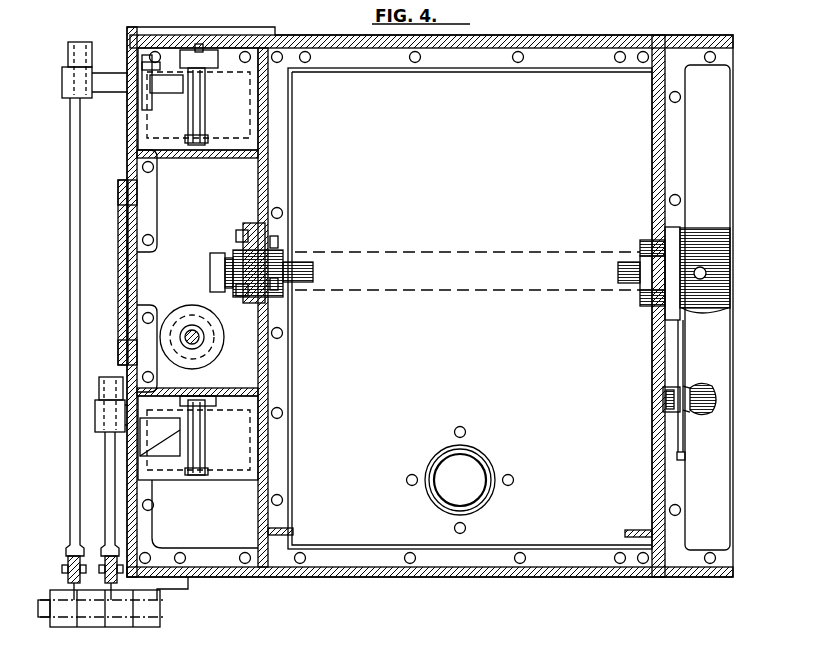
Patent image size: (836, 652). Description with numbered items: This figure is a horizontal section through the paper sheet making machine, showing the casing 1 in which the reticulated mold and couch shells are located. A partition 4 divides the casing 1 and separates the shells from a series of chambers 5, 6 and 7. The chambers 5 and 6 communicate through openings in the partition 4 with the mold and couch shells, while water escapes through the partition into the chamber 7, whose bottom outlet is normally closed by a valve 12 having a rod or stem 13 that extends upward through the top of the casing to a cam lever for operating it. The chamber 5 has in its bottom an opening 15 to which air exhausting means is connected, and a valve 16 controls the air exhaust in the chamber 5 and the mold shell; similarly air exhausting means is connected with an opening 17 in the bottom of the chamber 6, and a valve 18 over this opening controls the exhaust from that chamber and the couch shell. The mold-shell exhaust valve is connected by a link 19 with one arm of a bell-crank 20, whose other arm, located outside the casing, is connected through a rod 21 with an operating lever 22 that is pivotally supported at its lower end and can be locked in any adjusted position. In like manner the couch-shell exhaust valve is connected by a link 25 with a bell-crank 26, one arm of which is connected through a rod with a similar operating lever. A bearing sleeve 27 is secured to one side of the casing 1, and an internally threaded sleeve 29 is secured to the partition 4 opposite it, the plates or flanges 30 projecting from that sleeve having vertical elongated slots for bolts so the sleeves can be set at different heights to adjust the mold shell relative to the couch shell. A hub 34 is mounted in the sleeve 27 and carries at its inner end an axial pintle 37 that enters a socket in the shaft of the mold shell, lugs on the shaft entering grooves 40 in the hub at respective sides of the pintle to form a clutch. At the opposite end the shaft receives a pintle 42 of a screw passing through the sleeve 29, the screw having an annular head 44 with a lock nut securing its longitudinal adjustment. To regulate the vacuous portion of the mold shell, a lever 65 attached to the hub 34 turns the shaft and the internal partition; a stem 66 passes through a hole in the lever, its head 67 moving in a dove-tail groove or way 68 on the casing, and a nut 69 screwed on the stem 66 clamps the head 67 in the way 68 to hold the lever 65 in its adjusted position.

The casing 1 is at (378, 592).
The partition 4 is at (270, 440).
The chamber 5 is at (197, 468).
The chamber 6 is at (228, 52).
The chamber 7 is at (152, 272).
The valve 12 is at (222, 337).
The rod or stem 13 is at (192, 328).
The opening 15 is at (160, 444).
The valve 16 is at (198, 438).
The opening 17 is at (162, 95).
The valve 18 is at (198, 105).
The link 19 is at (198, 476).
The bell-crank 20 is at (96, 402).
The rod 21 is at (106, 466).
The operating lever 22 is at (70, 560).
The link 25 is at (200, 146).
The bell-crank 26 is at (63, 68).
The bearing sleeve 27 is at (404, 327).
The internally threaded sleeve 29 is at (246, 236).
The plate or flange 30 is at (728, 310).
The hub 34 is at (666, 273).
The pintle 37 is at (620, 274).
The grooves 40 is at (641, 250).
The pintle 42 is at (308, 262).
The annular head 44 is at (213, 255).
The lever 65 is at (699, 392).
The stem 66 is at (714, 396).
The head 67 is at (662, 408).
The dove-tail groove or way 68 is at (662, 392).
The nut 69 is at (702, 414).